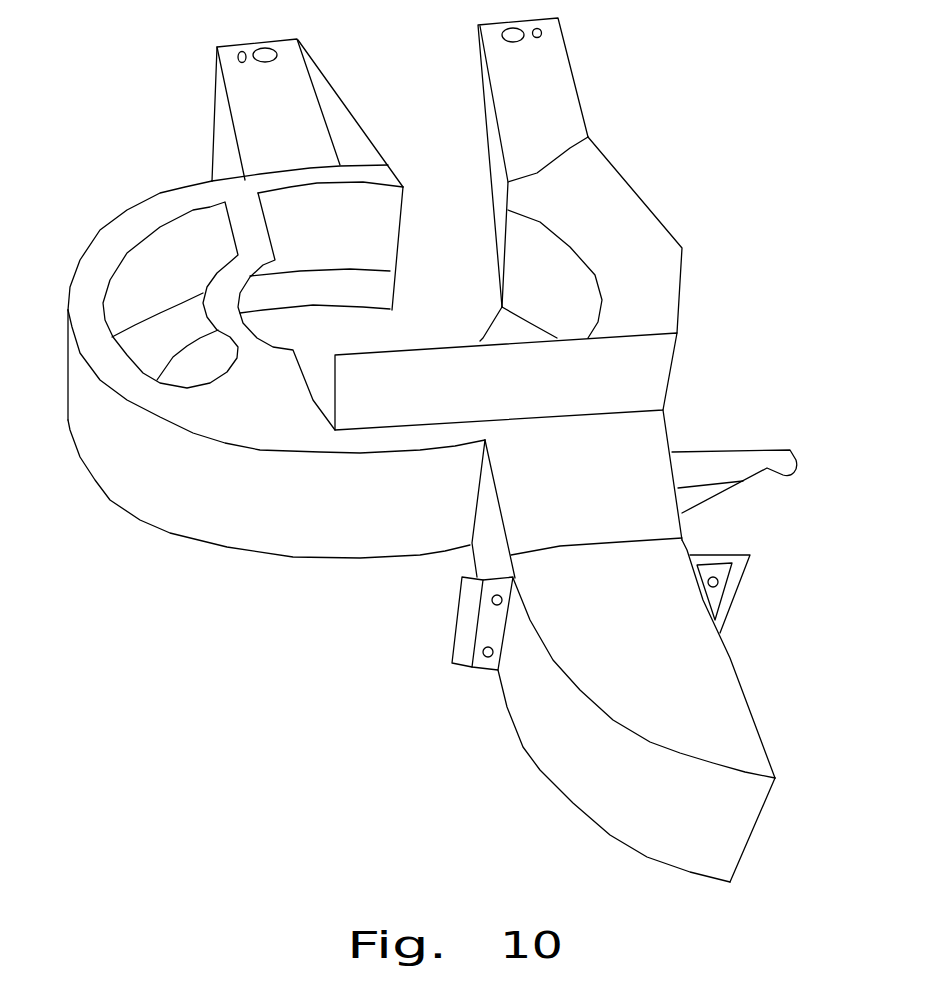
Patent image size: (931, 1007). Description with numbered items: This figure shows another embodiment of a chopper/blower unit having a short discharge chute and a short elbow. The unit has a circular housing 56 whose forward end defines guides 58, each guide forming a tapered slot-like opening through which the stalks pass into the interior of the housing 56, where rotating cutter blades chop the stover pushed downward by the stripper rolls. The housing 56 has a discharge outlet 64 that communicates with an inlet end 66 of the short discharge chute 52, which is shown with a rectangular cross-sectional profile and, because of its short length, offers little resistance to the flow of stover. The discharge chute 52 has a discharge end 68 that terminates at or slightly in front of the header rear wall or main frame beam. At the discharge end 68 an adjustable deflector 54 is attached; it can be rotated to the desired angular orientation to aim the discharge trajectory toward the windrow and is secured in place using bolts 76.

The discharge chute 52 is at (485, 548).
The deflector 54 is at (568, 800).
The circular housing 56 is at (223, 540).
The guides 58 is at (313, 57).
The discharge outlet 64 is at (580, 432).
The inlet end 66 is at (485, 499).
The discharge end 68 is at (682, 525).
The bolts 76 is at (488, 657).